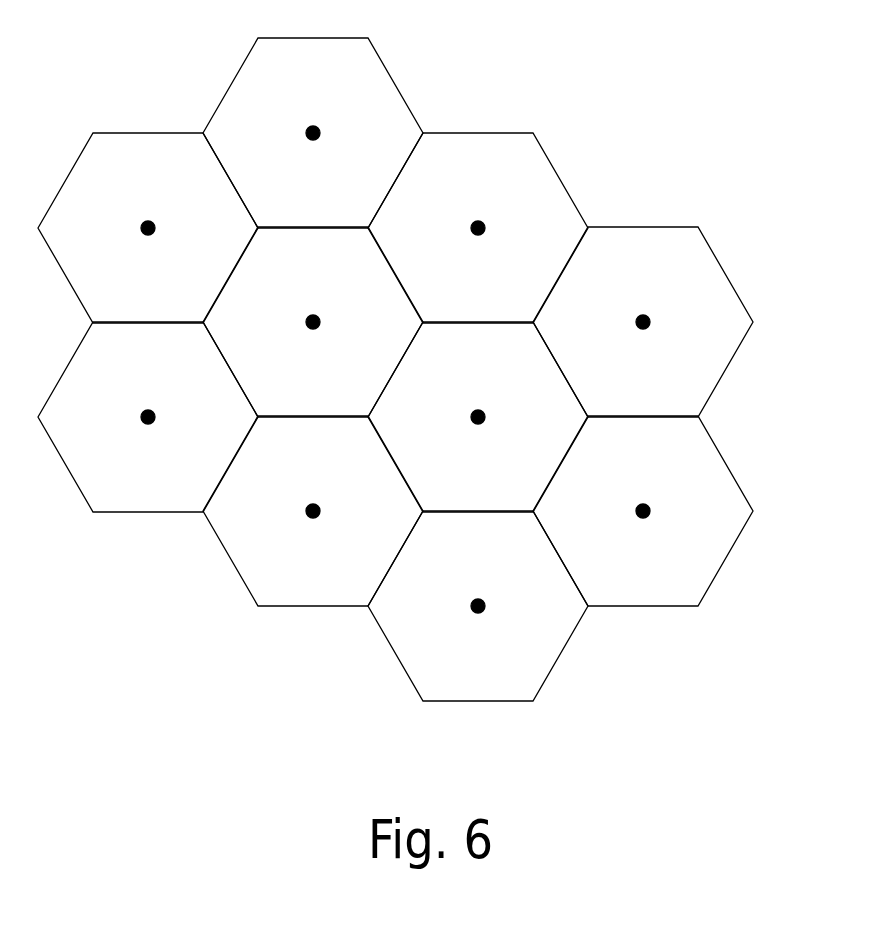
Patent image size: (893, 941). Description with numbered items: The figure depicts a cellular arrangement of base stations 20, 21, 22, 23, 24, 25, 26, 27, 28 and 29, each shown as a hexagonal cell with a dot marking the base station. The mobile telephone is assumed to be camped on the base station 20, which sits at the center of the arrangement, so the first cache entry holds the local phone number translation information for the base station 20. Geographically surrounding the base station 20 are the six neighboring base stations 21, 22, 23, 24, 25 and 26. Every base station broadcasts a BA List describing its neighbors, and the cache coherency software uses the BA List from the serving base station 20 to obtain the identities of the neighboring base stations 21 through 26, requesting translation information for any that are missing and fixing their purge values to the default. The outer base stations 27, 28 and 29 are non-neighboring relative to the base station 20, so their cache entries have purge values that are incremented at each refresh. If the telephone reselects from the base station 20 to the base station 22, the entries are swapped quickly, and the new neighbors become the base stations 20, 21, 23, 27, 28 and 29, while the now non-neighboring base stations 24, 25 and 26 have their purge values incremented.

The base station 20 is at (318, 319).
The base station 21 is at (482, 225).
The base station 22 is at (479, 417).
The base station 23 is at (305, 511).
The base station 24 is at (143, 414).
The base station 25 is at (146, 224).
The base station 26 is at (316, 128).
The base station 27 is at (647, 320).
The base station 28 is at (647, 509).
The base station 29 is at (482, 605).